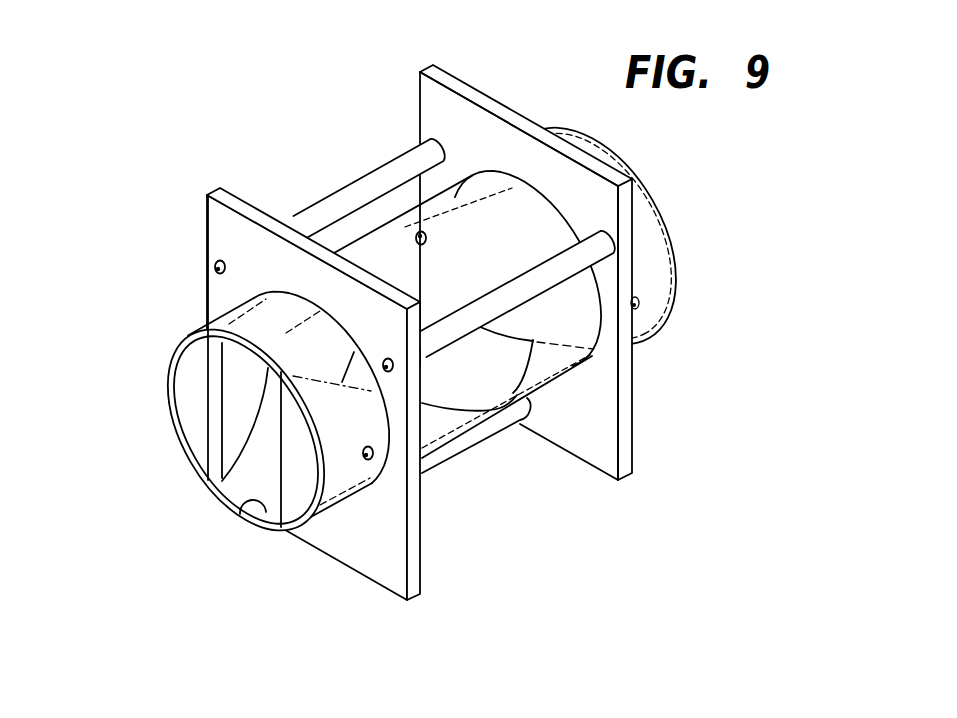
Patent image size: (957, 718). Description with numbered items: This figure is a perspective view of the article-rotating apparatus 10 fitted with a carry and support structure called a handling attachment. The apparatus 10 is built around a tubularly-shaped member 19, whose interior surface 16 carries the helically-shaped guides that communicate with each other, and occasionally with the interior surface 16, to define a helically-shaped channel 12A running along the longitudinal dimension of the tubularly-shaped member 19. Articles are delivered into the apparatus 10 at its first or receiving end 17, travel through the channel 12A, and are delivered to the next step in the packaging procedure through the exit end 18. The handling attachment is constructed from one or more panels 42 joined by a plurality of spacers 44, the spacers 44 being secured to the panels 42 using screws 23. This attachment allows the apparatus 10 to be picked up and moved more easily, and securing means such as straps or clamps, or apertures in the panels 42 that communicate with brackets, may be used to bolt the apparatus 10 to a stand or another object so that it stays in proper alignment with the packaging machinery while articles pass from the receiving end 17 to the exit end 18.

The article-rotating apparatus 10 is at (136, 291).
The channel 12A is at (255, 470).
The interior surface 16 is at (238, 505).
The first or receiving end 17 is at (166, 404).
The exit end 18 is at (665, 213).
The tubularly-shaped member 19 is at (640, 335).
The screws 23 is at (214, 266).
The panels 42 is at (635, 418).
The spacers 44 is at (368, 170).